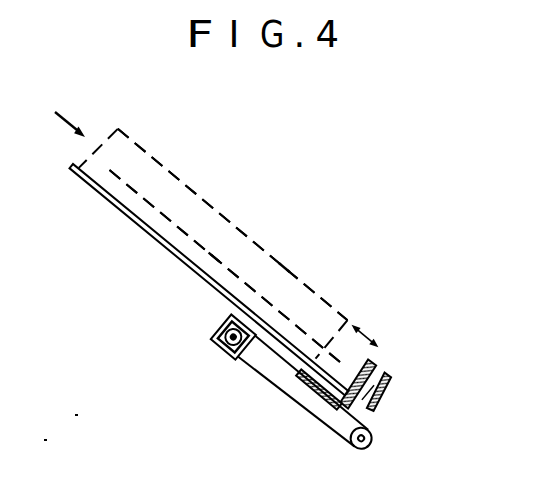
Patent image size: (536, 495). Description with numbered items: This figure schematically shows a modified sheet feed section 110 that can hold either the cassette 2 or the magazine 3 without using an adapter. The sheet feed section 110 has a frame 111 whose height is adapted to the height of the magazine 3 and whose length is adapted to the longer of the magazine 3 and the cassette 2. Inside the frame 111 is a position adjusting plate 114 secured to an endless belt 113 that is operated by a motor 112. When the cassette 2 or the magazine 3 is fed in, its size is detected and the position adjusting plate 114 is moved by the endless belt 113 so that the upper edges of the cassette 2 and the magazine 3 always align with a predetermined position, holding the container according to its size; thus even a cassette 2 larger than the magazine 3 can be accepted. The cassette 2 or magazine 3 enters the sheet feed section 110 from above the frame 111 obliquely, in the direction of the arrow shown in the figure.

The sheet feed section 110 is at (195, 146).
The cassette 2 is at (214, 256).
The magazine 3 is at (285, 266).
The frame 111 is at (387, 385).
The motor 112 is at (221, 352).
The endless belt 113 is at (292, 398).
The position adjusting plate 114 is at (371, 362).